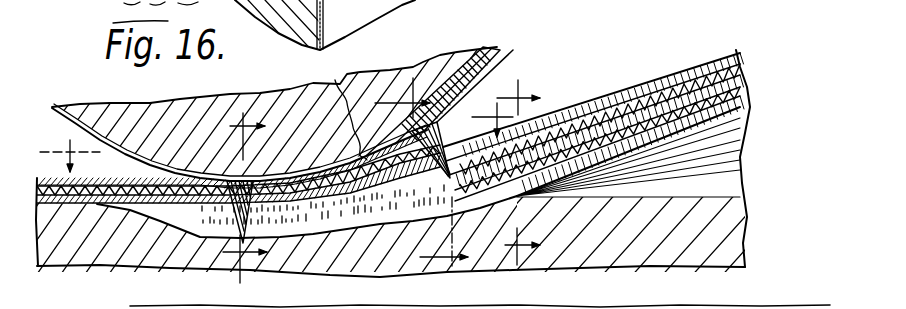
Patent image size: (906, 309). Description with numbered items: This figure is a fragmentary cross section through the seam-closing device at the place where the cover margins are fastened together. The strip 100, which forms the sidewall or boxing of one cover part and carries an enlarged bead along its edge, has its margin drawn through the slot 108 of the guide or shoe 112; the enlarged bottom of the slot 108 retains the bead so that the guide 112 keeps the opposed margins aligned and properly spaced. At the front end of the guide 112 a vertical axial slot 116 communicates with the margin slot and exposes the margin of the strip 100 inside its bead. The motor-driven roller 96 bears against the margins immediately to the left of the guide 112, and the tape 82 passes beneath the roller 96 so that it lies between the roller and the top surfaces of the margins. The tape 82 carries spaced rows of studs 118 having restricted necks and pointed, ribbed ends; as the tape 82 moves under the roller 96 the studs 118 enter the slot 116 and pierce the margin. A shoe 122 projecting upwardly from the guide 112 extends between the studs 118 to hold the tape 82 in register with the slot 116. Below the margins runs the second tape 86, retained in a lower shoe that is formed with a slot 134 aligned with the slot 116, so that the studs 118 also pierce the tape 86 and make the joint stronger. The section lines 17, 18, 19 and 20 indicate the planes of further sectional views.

The section line 17- 17 is at (276, 135).
The cover part 18 is at (512, 172).
The section line 19- 19 is at (421, 173).
The cover part 20 is at (293, 161).
The tape 82 is at (497, 47).
The tape 86 is at (742, 68).
The roller 96 is at (368, 79).
The strip 100 is at (713, 57).
The slot 108 is at (133, 306).
The guide 112 is at (640, 77).
The vertical axial slot 116 is at (292, 81).
The stud 118 is at (206, 296).
The shoe 122 is at (557, 50).
The slot 134 is at (363, 227).